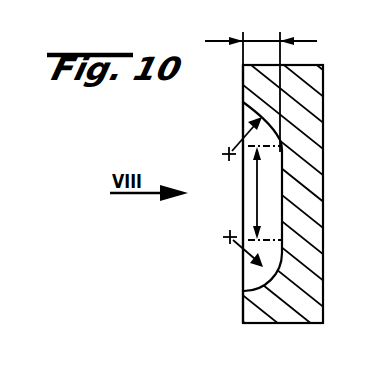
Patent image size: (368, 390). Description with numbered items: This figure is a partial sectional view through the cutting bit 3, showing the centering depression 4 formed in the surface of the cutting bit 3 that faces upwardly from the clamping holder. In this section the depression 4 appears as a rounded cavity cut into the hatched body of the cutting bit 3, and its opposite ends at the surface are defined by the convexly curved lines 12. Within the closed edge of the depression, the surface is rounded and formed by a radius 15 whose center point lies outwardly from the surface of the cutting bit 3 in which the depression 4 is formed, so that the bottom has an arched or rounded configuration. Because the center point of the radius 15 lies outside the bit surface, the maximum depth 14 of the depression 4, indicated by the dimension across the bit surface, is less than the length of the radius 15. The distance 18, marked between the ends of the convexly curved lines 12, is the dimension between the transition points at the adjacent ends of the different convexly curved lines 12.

The cutting bit 3 is at (229, 316).
The centering recess or depression 4 is at (247, 172).
The convexly curved lines 12 is at (241, 107).
The maximum depth 14 is at (259, 39).
The radius 15 is at (243, 146).
The distance 18 is at (256, 188).